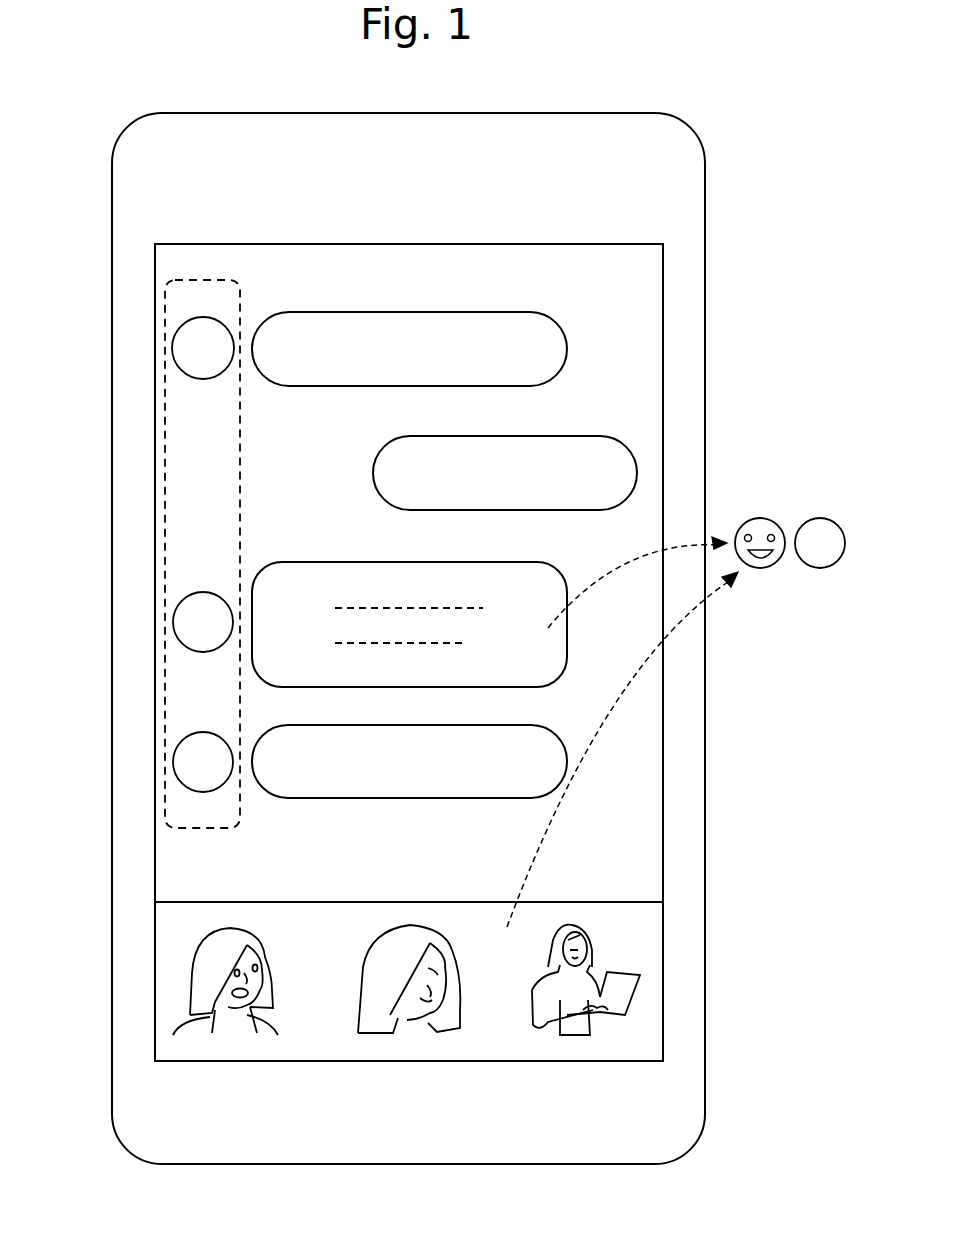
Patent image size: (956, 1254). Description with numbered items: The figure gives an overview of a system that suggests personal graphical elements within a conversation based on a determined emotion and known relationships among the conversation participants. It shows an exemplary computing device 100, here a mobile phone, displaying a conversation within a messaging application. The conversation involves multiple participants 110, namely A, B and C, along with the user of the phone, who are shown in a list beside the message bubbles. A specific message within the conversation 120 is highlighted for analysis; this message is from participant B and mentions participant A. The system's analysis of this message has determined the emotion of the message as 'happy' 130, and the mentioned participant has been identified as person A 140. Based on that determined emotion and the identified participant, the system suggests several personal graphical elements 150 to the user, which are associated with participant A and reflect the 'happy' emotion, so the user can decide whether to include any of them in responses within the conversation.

The computing device 100 is at (705, 200).
The participants 110 is at (165, 422).
The message within the conversation 120 is at (290, 562).
The emotion 'happy' 130 is at (758, 518).
The person A 140 is at (820, 568).
The personal graphical elements 150 is at (178, 943).